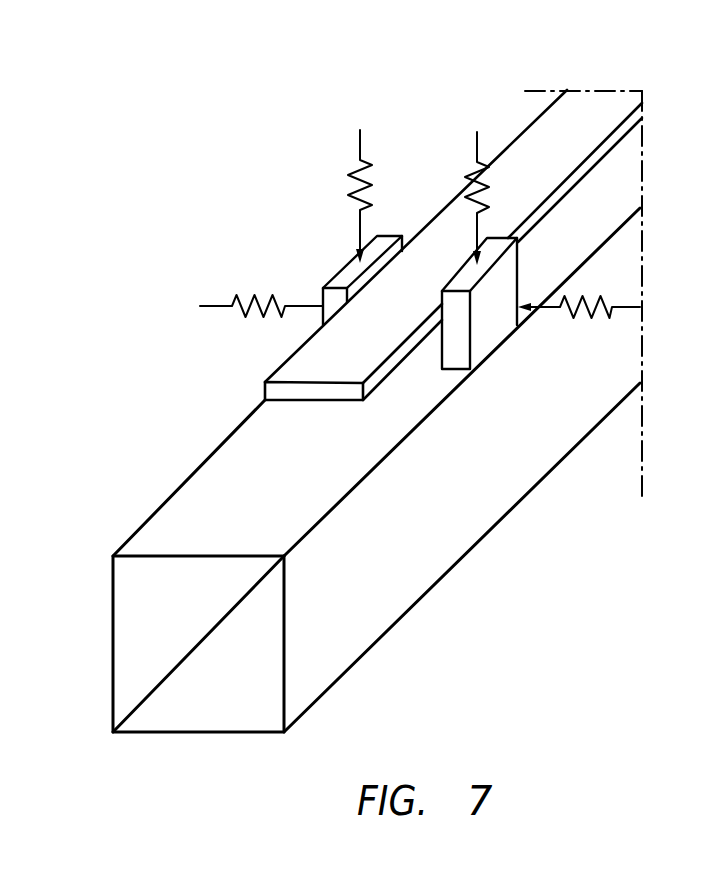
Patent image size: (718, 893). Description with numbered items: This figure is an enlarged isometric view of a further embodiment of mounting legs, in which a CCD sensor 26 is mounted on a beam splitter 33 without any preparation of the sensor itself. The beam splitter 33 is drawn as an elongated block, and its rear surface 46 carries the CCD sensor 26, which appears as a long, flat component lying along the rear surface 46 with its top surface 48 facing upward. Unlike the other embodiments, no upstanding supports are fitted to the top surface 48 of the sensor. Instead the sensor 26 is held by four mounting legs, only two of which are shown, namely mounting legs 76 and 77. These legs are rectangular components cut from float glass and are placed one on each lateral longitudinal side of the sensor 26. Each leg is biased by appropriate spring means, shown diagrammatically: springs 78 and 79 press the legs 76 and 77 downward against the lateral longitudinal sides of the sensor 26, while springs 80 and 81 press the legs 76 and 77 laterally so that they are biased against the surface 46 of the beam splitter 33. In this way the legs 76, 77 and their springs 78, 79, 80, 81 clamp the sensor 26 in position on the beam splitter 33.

The CCD sensor 26 is at (521, 127).
The beam splitter 33 is at (128, 537).
The rear surface 46 is at (237, 482).
The top surface 48 is at (593, 126).
The mounting leg 76 is at (338, 281).
The mounting leg 77 is at (508, 273).
The spring 78 is at (338, 198).
The spring 79 is at (496, 188).
The spring 80 is at (258, 330).
The spring 81 is at (595, 327).